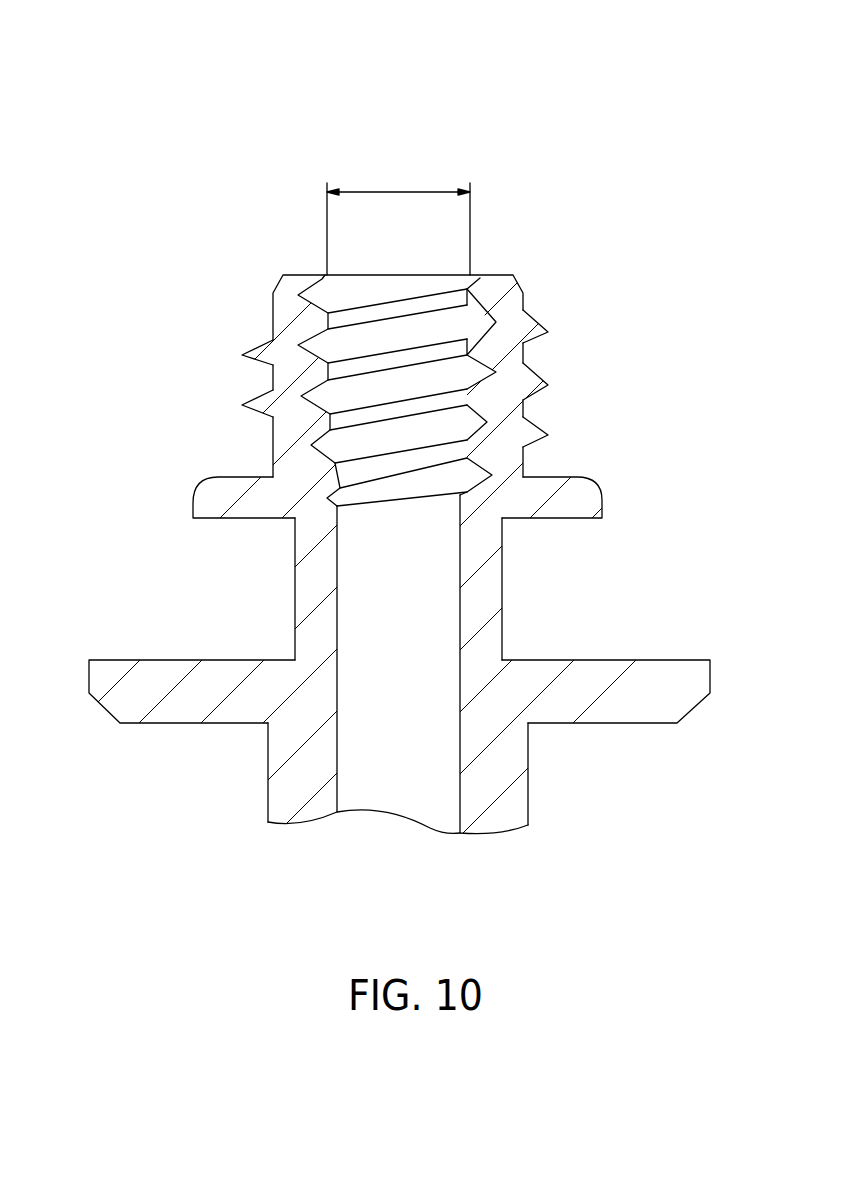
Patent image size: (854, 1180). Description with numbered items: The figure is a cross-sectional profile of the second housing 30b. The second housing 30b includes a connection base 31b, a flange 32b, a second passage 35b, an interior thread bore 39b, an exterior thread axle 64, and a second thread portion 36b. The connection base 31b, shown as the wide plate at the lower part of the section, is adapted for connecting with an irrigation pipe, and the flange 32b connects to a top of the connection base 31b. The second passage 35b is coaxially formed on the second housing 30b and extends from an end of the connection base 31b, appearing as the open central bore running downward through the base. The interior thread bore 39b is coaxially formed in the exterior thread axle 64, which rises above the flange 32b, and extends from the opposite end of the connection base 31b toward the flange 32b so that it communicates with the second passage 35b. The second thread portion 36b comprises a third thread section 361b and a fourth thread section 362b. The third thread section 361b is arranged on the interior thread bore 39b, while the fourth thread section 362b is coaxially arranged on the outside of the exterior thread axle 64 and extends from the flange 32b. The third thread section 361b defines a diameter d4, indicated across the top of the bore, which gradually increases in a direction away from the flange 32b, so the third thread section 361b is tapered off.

The second housing 30b is at (490, 103).
The connection base 31b is at (663, 660).
The flange 32b is at (577, 505).
The second passage 35b is at (397, 787).
The second thread portion 36b is at (138, 253).
The third thread section 361b is at (313, 338).
The fourth thread section 362b is at (252, 400).
The interior thread bore 39b is at (400, 295).
The exterior thread axle 64 is at (500, 297).
The diameter d4 is at (398, 217).